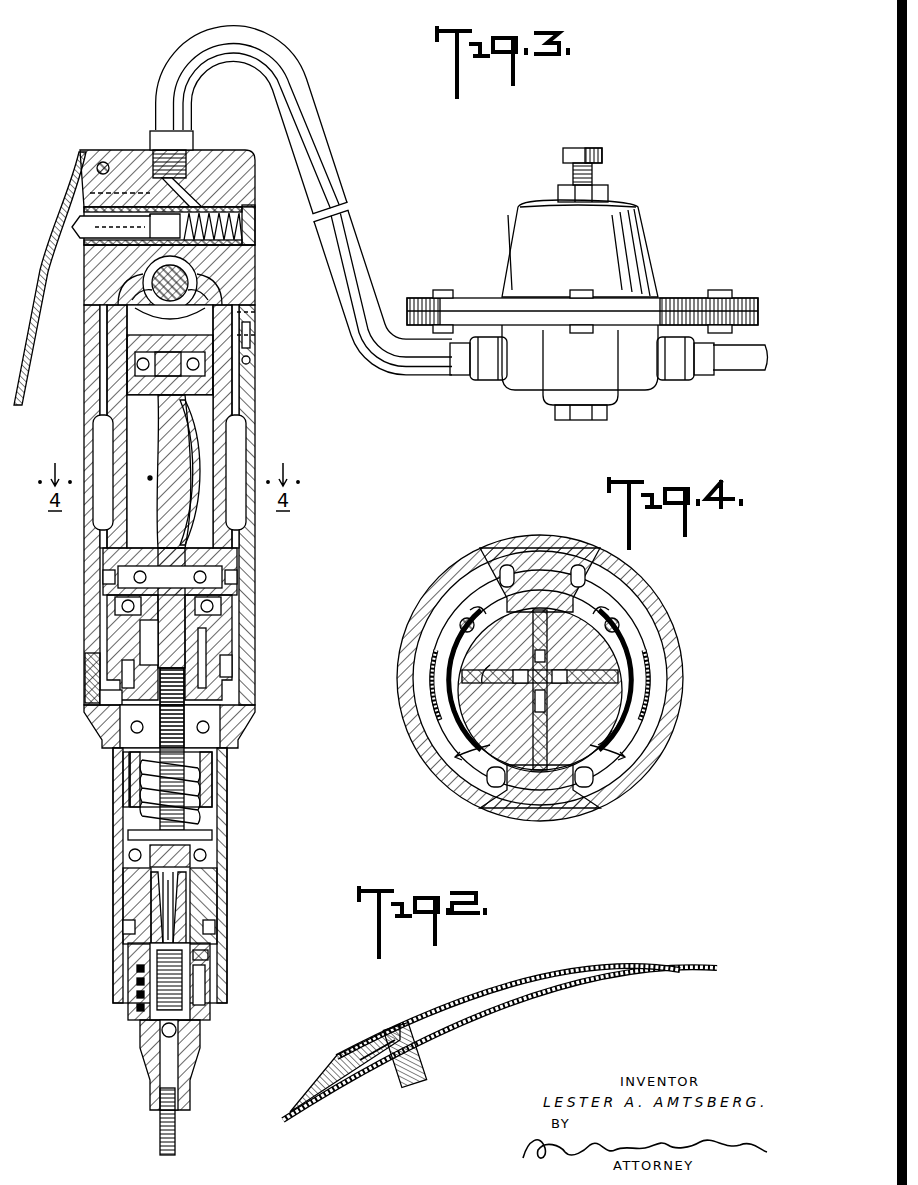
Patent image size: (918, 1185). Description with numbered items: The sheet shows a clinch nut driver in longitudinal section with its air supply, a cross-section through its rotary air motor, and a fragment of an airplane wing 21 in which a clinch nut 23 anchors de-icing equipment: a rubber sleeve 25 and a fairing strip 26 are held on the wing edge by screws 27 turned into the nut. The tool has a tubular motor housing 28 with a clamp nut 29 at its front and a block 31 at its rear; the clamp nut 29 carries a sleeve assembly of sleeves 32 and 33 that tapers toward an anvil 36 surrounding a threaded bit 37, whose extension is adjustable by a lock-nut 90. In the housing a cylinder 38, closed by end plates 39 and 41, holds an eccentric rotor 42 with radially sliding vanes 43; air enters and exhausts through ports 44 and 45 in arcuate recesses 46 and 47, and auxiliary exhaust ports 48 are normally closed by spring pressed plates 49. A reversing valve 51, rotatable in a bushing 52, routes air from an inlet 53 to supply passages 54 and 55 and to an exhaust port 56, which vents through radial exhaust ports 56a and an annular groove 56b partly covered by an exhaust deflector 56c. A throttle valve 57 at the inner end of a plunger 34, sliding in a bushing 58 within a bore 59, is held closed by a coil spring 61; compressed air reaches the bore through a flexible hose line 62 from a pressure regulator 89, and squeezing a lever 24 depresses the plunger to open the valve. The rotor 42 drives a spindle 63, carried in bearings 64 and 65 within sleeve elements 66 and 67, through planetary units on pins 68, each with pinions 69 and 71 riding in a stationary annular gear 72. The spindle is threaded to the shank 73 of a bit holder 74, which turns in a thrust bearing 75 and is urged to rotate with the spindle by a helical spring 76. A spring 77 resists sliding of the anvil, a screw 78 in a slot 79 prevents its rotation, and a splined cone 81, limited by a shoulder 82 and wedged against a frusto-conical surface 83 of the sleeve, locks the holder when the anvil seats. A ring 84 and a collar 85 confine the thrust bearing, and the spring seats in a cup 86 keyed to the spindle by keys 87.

In FIG. 2, the wing 21 is at (532, 1004).
In FIG. 2, the stud 23 is at (422, 1060).
In FIG. 3, the lever 24 is at (36, 300).
In FIG. 2, the rubber sleeve 25 is at (296, 1106).
In FIG. 2, the fairing strip 26 is at (518, 980).
In FIG. 2, the screws 27 is at (410, 1022).
In FIG. 3, the tubular motor housing 28 is at (92, 559).
In FIG. 4, the tubular motor housing 28 is at (442, 585).
In FIG. 3, the clamp nut 29 is at (232, 732).
In FIG. 3, the block 31 is at (100, 284).
In FIG. 3, the sleeve 32 is at (118, 810).
In FIG. 3, the sleeve 33 is at (133, 955).
In FIG. 3, the plunger 34 is at (92, 250).
In FIG. 3, the anvil 36 is at (145, 1048).
In FIG. 3, the threaded bit 37 is at (158, 1133).
In FIG. 3, the cylinder 38 is at (110, 535).
In FIG. 4, the cylinder 38 is at (455, 688).
In FIG. 3, the plate 39 is at (128, 383).
In FIG. 3, the plate 41 is at (110, 575).
In FIG. 3, the rotor 42 is at (163, 430).
In FIG. 4, the rotor 42 is at (497, 653).
In FIG. 3, the vanes 43 is at (182, 479).
In FIG. 4, the vanes 43 is at (540, 798).
In FIG. 4, the port 44 is at (620, 650).
In FIG. 4, the port 45 is at (400, 652).
In FIG. 3, the arcuate external recess 46 is at (226, 434).
In FIG. 4, the arcuate external recess 46 is at (577, 565).
In FIG. 3, the arcuate external recess 47 is at (108, 434).
In FIG. 4, the arcuate external recess 47 is at (507, 565).
In FIG. 4, the auxiliary exhaust ports 48 is at (455, 757).
In FIG. 4, the spring pressed plate 49 is at (445, 728).
In FIG. 3, the reversing valve 51 is at (134, 286).
In FIG. 3, the bushing 52 is at (203, 285).
In FIG. 3, the inlet 53 is at (160, 262).
In FIG. 3, the supply passage 54 is at (252, 288).
In FIG. 3, the supply passage 55 is at (92, 315).
In FIG. 3, the exhaust port 56 is at (166, 310).
In FIG. 3, the radial exhaust ports 56a is at (258, 312).
In FIG. 3, the annular groove 56b is at (252, 362).
In FIG. 3, the exhaust deflector 56c is at (256, 336).
In FIG. 3, the throttle valve 57 is at (193, 184).
In FIG. 3, the bushing 58 is at (150, 148).
In FIG. 3, the bore 59 is at (218, 206).
In FIG. 3, the coil spring 61 is at (257, 216).
In FIG. 3, the flexible hose line 62 is at (158, 77).
In FIG. 3, the spindle 63 is at (125, 632).
In FIG. 3, the bearing 64 is at (106, 610).
In FIG. 3, the bearing 65 is at (125, 738).
In FIG. 3, the sleeve element 66 is at (88, 660).
In FIG. 3, the sleeve 67 is at (112, 704).
In FIG. 3, the pin 68 is at (212, 612).
In FIG. 3, the pinion 69 is at (210, 645).
In FIG. 3, the pinion 71 is at (236, 680).
In FIG. 3, the stationary annular gear 72 is at (125, 680).
In FIG. 3, the shank 73 is at (158, 780).
In FIG. 3, the bit holder 74 is at (145, 865).
In FIG. 3, the thrust bearing 75 is at (128, 858).
In FIG. 3, the helical spring 76 is at (118, 770).
In FIG. 3, the spring 77 is at (135, 985).
In FIG. 3, the screw 78 is at (210, 965).
In FIG. 3, the slot 79 is at (206, 992).
In FIG. 3, the cone 81 is at (125, 925).
In FIG. 3, the shoulder 82 is at (205, 905).
In FIG. 3, the frusto-conical surface 83 is at (140, 900).
In FIG. 3, the ring 84 is at (205, 887).
In FIG. 3, the collar 85 is at (212, 843).
In FIG. 3, the cup 86 is at (205, 786).
In FIG. 3, the keys 87 is at (200, 757).
In FIG. 3, the pressure regulator 89 is at (667, 225).
In FIG. 3, the lock-nut 90 is at (176, 1040).